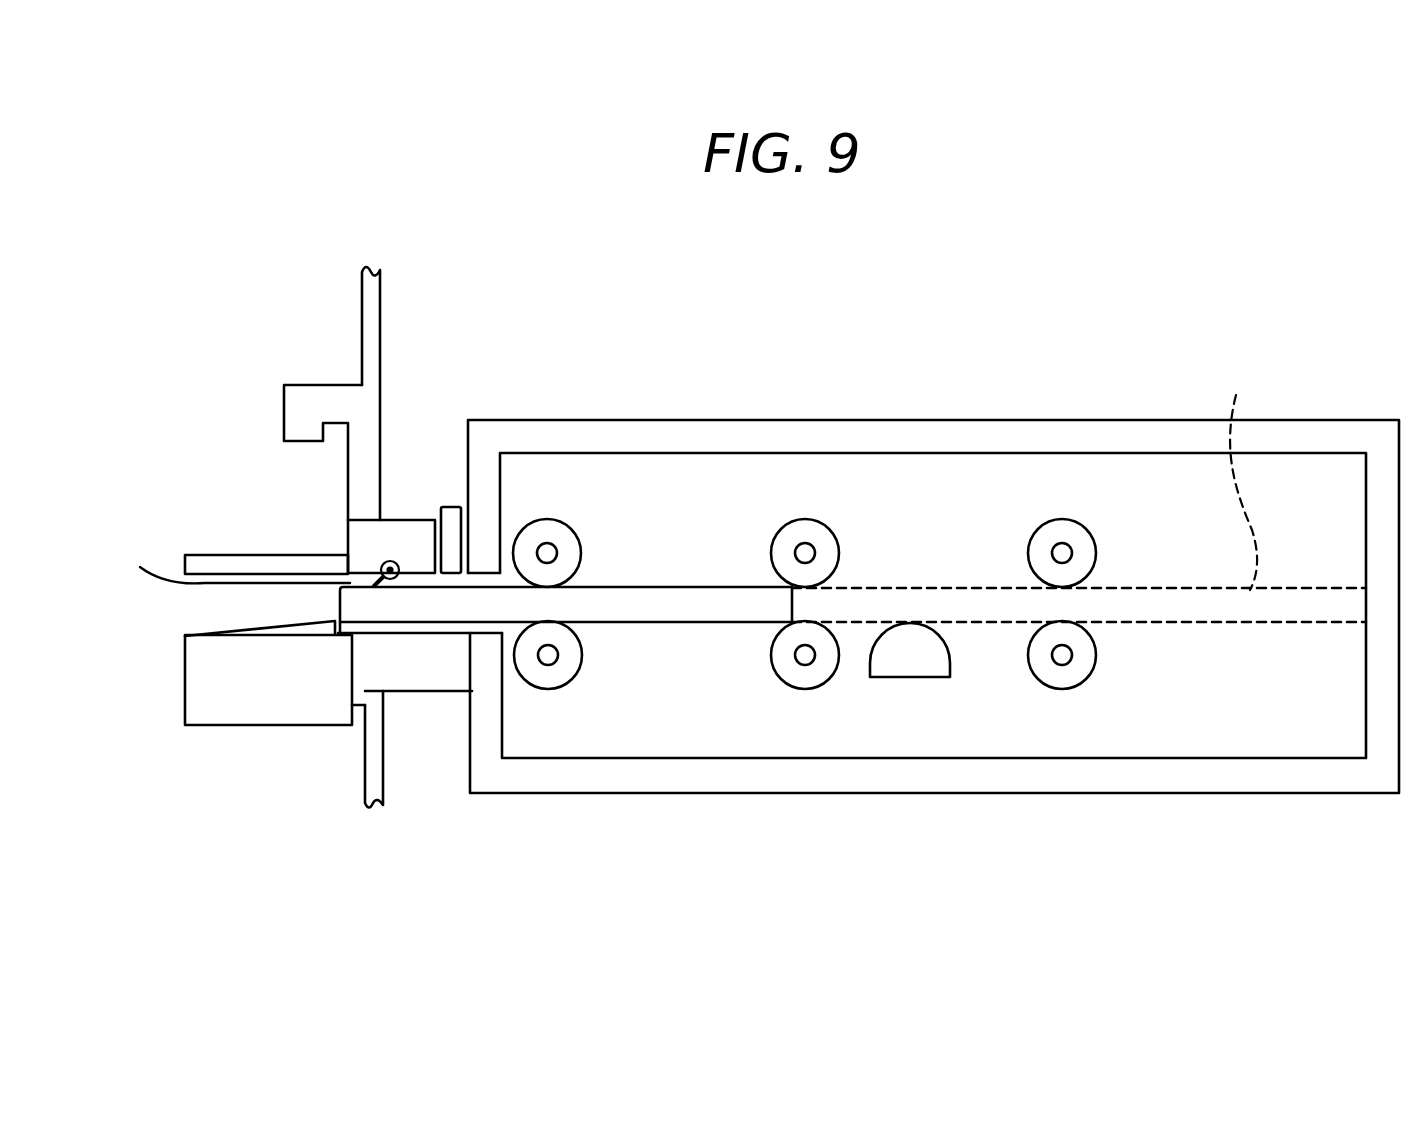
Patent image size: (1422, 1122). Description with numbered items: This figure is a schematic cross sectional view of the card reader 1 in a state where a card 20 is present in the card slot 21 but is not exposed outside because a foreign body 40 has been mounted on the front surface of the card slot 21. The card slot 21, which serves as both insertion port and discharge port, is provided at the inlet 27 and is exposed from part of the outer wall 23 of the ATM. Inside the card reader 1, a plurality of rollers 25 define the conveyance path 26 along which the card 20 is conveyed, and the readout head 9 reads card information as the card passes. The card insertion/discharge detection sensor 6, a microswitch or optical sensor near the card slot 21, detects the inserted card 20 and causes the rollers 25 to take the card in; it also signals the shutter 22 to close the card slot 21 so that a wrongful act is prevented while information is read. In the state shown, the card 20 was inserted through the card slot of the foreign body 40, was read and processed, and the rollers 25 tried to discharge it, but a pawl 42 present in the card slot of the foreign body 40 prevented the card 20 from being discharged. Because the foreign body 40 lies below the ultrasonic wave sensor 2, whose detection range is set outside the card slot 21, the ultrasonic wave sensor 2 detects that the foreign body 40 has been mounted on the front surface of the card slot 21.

The card reader 1 is at (887, 338).
The ultrasonic wave sensor 2 is at (290, 401).
The card insertion/discharge detection sensor 6 is at (384, 563).
The readout head 9 is at (912, 668).
The card 20 is at (680, 605).
The card slot 21 is at (227, 565).
The shutter 22 is at (450, 513).
The outer wall 23 is at (375, 330).
The rollers 25 is at (548, 535).
The conveyance path 26 is at (1245, 476).
The inlet 27 is at (398, 527).
The foreign body 40 is at (212, 565).
The pawl 42 is at (338, 622).